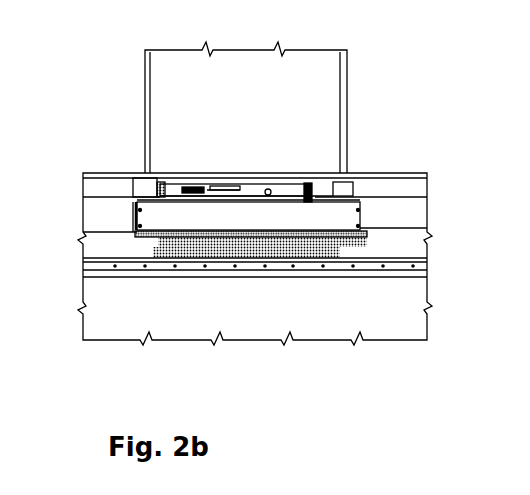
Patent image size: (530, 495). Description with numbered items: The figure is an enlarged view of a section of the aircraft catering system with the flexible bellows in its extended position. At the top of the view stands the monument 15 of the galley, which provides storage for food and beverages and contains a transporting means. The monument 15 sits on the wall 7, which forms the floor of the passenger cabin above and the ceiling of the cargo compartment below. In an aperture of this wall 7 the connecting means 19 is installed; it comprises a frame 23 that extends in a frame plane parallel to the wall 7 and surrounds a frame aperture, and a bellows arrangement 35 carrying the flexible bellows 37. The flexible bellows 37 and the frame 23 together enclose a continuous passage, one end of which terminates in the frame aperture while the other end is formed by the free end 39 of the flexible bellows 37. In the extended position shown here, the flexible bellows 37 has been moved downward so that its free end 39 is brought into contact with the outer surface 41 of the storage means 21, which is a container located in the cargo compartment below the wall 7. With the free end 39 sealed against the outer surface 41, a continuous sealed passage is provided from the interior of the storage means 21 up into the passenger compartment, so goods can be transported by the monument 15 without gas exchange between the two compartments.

The wall 7 is at (383, 205).
The monument 15 is at (252, 126).
The connecting means 19 is at (308, 190).
The storage means 21 is at (234, 324).
The frame 23 is at (152, 198).
The bellows arrangement 35 is at (135, 247).
The flexible bellows 37 is at (201, 258).
The free end 39 is at (320, 250).
The outer surface 41 is at (415, 262).